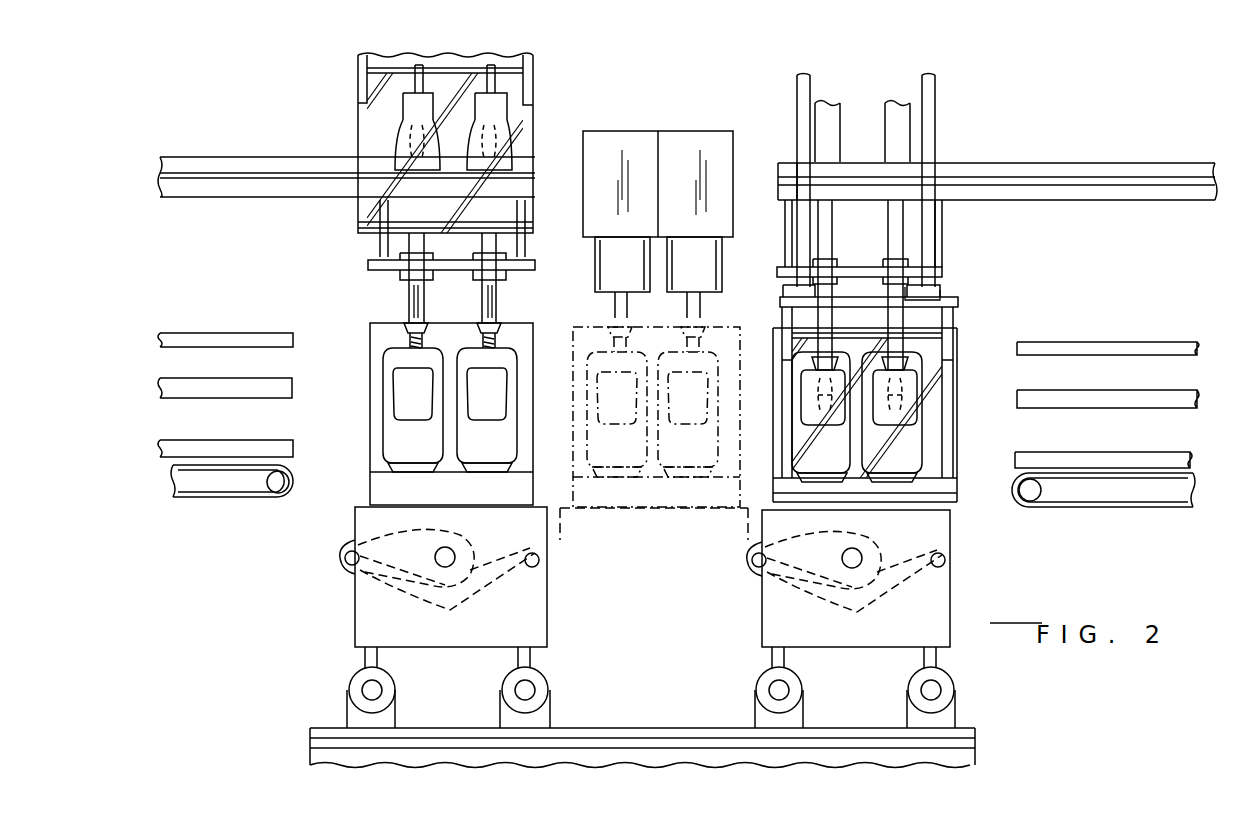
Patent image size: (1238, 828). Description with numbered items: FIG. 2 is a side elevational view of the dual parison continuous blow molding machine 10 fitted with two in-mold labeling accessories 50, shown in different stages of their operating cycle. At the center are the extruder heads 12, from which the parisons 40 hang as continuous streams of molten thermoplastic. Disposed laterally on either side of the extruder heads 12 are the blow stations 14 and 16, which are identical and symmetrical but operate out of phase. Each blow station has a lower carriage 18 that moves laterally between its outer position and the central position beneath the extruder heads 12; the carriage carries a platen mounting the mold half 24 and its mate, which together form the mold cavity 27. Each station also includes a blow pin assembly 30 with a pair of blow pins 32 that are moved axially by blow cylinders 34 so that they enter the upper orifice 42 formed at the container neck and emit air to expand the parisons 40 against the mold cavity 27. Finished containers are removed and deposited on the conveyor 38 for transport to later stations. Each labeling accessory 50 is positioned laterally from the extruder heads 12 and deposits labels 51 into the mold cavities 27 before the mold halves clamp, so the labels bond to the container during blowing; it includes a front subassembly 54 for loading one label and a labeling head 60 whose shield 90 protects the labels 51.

The blow molding machine 10 is at (950, 125).
The extruder heads 12 is at (595, 263).
The blow station 14 is at (1008, 155).
The blow station 16 is at (285, 150).
The lower carriage 18 is at (356, 527).
The mold half 24 is at (375, 322).
The mold cavity 27 is at (392, 444).
The blow pin assembly 30 is at (400, 290).
The blow pins 32 is at (407, 305).
The blow cylinders 34 is at (861, 186).
The conveyor 38 is at (252, 498).
The parisons 40 is at (616, 306).
The upper orifice 42 is at (500, 324).
The in-mold labeling accessory 50 is at (536, 112).
The labels 51 is at (908, 396).
The front subassembly 54 is at (958, 330).
The labeling head 60 is at (958, 448).
The shield 90 is at (358, 226).